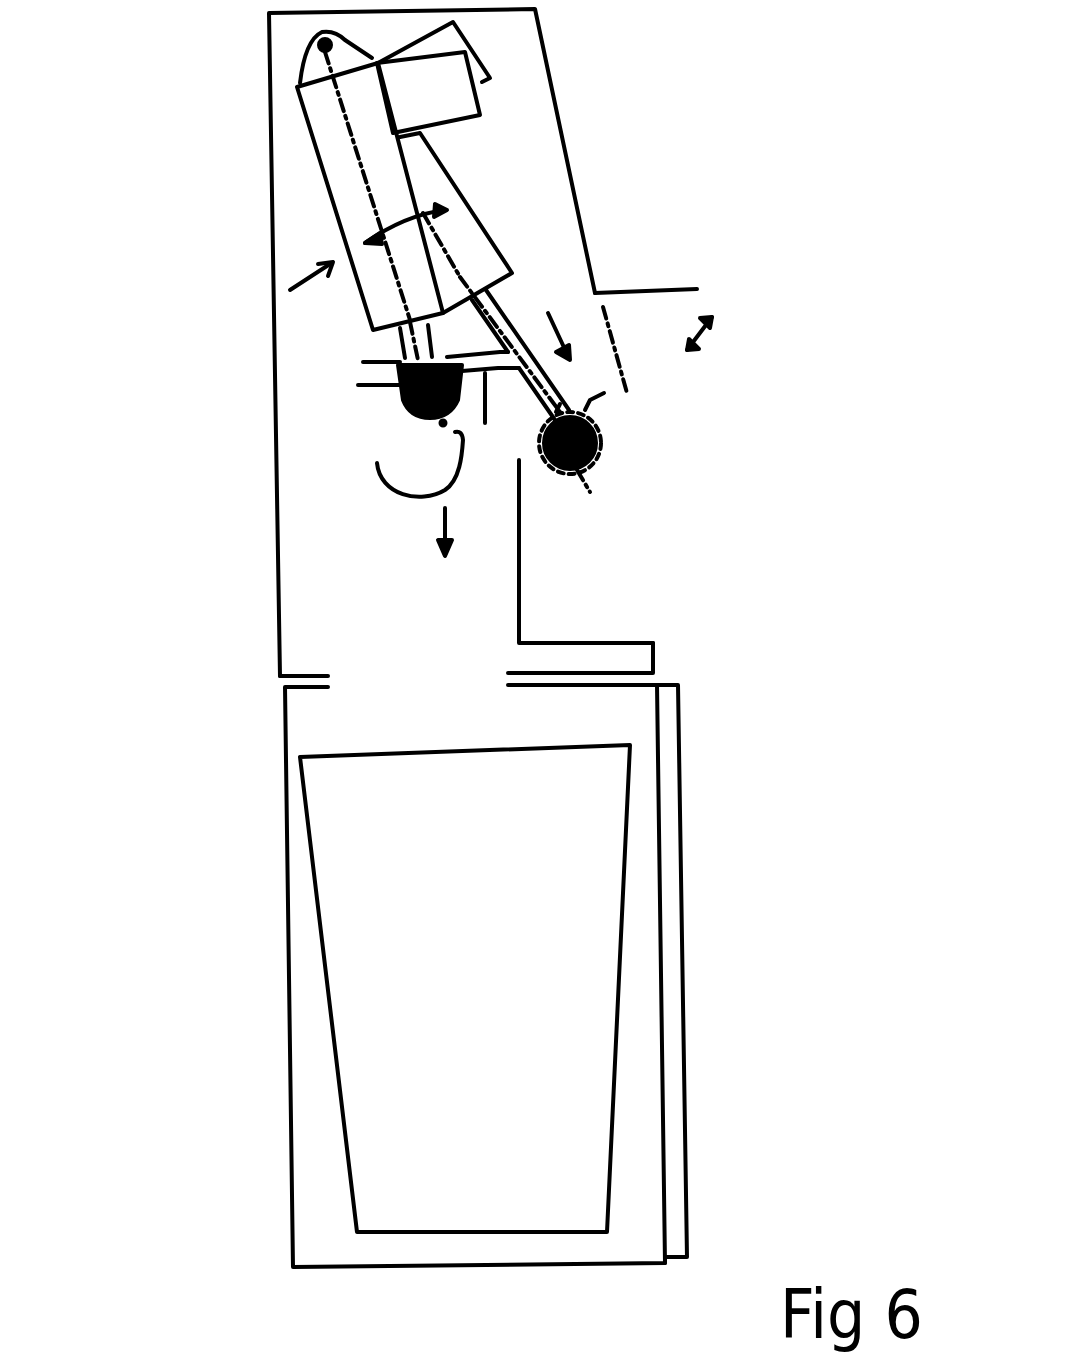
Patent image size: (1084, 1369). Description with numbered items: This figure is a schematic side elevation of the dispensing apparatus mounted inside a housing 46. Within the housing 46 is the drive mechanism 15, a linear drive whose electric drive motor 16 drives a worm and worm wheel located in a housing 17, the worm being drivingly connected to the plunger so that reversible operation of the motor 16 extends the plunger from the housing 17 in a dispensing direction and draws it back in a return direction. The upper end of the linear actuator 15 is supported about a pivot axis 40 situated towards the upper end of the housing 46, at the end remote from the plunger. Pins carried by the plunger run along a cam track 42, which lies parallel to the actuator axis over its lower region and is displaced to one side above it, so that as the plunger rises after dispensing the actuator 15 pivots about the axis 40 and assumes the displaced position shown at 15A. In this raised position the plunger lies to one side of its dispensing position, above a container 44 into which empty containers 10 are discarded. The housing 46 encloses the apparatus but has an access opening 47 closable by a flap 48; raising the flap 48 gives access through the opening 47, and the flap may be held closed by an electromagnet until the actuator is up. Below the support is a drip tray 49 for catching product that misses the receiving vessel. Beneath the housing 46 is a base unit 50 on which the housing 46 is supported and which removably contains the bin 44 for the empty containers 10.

The container 10 is at (593, 493).
The drive mechanism 15 is at (472, 190).
The raised position of the linear actuator 15A is at (331, 260).
The electric drive motor 16 is at (457, 102).
The housing 17 is at (338, 200).
The pivot axis 40 is at (323, 45).
The cam track 42 is at (543, 453).
The container 44 is at (305, 800).
The housing 46 is at (277, 475).
The access opening 47 is at (637, 360).
The flap 48 is at (665, 278).
The drip tray 49 is at (640, 660).
The base unit 50 is at (287, 1013).